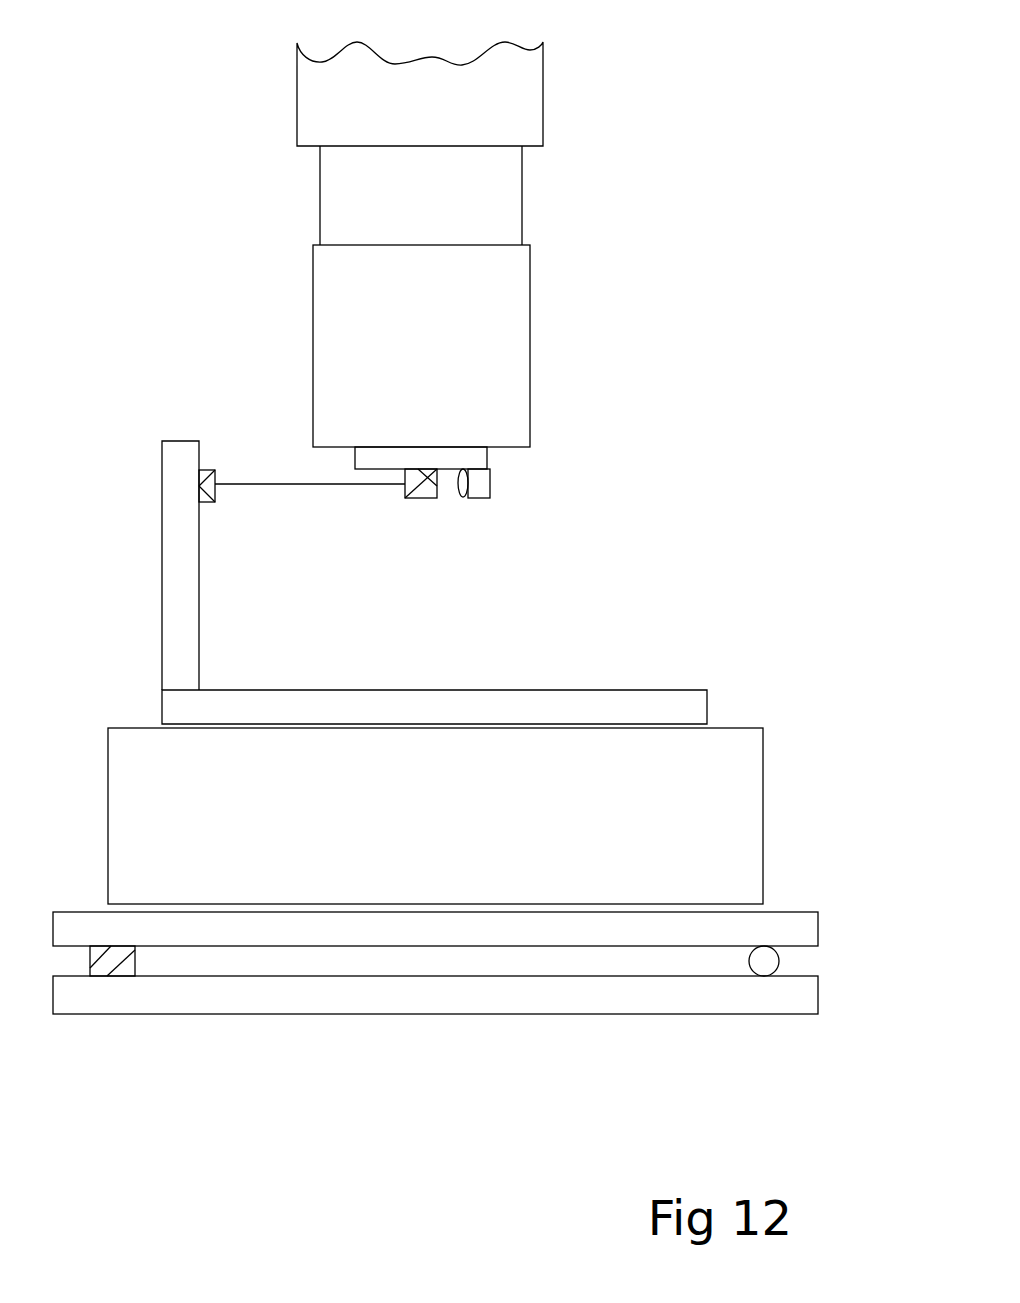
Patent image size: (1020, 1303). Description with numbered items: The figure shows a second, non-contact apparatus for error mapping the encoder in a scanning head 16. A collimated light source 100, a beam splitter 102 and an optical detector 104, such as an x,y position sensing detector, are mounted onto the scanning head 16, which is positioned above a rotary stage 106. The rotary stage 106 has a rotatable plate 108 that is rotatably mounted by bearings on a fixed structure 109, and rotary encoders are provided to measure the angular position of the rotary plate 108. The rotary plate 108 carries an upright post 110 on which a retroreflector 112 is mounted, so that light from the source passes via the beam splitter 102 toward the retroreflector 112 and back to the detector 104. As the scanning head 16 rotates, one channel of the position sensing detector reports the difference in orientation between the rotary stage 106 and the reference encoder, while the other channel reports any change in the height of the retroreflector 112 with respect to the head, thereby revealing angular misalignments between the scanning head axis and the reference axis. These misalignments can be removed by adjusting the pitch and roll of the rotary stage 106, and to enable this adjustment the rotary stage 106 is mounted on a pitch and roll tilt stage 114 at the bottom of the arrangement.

The scanning head 16 is at (548, 269).
The collimated light source 100 is at (490, 483).
The beam splitter 102 is at (427, 498).
The optical detector 104 is at (448, 470).
The rotary stage 106 is at (305, 497).
The rotatable plate 108 is at (607, 705).
The fixed structure 109 is at (740, 814).
The upright post 110 is at (173, 540).
The retroreflector 112 is at (216, 466).
The pitch and roll tilt stage 114 is at (857, 977).